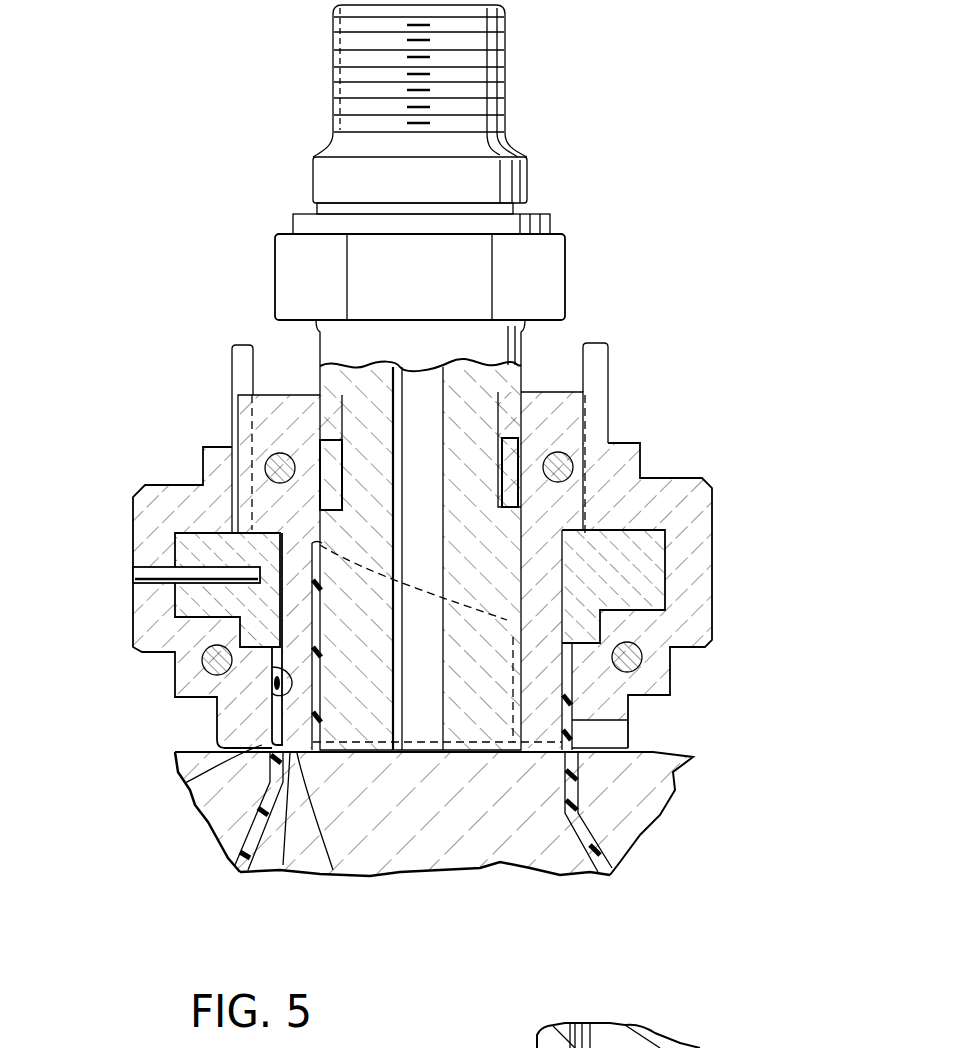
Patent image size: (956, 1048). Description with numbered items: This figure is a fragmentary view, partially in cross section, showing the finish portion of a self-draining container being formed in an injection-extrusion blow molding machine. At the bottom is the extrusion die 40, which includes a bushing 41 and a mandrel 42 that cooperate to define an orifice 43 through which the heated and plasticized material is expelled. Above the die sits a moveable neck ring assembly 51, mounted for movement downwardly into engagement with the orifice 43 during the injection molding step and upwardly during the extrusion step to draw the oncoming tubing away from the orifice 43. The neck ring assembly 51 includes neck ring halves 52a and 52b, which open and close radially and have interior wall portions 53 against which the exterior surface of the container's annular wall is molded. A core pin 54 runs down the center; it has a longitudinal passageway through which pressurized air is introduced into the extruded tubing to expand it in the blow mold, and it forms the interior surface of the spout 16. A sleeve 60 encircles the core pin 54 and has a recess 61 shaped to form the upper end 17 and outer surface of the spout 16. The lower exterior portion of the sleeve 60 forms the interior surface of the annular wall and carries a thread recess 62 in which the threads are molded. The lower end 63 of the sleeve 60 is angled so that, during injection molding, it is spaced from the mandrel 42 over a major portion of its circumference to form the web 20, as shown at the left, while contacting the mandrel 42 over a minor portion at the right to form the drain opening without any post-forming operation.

The spout 16 is at (313, 600).
The upper end 17 is at (320, 545).
The web 20 is at (333, 873).
The extrusion die 40 is at (680, 737).
The bushing 41 is at (218, 813).
The mandrel 42 is at (360, 870).
The orifice 43 is at (185, 783).
The neck ring assembly 51 is at (720, 600).
The neck ring half 52a is at (147, 527).
The neck ring half 52b is at (713, 527).
The interior wall portions 53 is at (262, 722).
The core pin 54 is at (525, 347).
The sleeve 60 is at (267, 420).
The recess 61 is at (317, 588).
The thread recess 62 is at (280, 683).
The lower end 63 is at (283, 858).